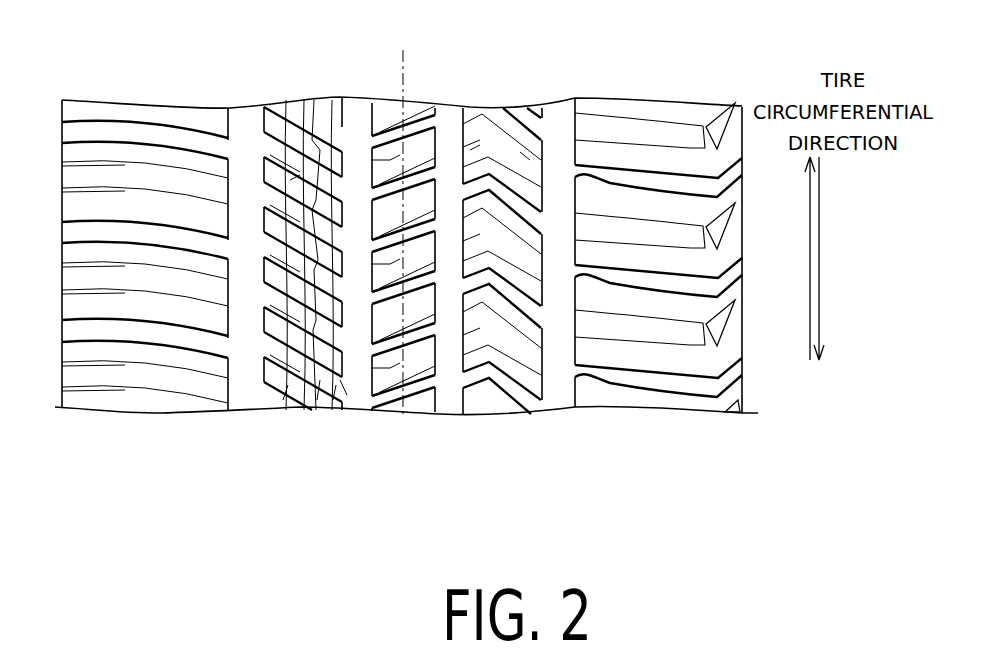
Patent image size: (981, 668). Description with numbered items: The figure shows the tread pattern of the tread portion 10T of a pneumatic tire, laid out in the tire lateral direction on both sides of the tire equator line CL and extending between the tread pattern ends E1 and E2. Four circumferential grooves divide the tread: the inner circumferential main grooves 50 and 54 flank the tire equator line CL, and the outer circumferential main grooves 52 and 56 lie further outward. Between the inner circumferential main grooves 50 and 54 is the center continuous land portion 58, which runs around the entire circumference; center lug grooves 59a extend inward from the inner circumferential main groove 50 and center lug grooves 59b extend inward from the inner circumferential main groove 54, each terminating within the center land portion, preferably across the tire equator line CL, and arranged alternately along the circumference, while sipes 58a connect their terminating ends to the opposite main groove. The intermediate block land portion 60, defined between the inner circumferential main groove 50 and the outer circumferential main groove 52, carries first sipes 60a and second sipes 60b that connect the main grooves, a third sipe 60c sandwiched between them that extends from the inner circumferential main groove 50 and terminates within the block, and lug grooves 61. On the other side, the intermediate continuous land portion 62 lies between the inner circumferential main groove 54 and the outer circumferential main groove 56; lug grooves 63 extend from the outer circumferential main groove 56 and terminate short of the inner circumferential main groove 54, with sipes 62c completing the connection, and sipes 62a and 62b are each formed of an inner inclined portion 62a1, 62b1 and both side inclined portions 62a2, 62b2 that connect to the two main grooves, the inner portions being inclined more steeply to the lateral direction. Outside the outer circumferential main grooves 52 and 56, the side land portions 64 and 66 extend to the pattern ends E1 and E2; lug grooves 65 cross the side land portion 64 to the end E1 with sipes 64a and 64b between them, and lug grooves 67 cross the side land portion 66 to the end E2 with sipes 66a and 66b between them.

The tread portion 10T is at (577, 90).
The inner circumferential main groove 50 is at (447, 148).
The outer circumferential main groove 52 is at (556, 130).
The inner circumferential main groove 54 is at (358, 120).
The outer circumferential main groove 56 is at (252, 135).
The center continuous land portion 58 is at (405, 400).
The sipe 58a is at (400, 400).
The center lug groove 59a is at (457, 400).
The center lug groove 59b is at (383, 395).
The intermediate block land portion 60 is at (475, 400).
The first sipe 60a is at (498, 165).
The second sipe 60b is at (520, 152).
The third sipe 60c is at (470, 150).
The lug groove 61 is at (513, 400).
The intermediate continuous land portion 62 is at (303, 400).
The sipe 62a is at (276, 135).
The inner inclined portion 62a1 is at (367, 400).
The both side inclined portion 62a2 is at (290, 180).
The sipe 62b is at (305, 175).
The inner inclined portion 62b1 is at (317, 400).
The both side inclined portion 62b2 is at (283, 400).
The sipe 62c is at (322, 165).
The lug groove 63 is at (300, 400).
The side land portion 64 is at (615, 400).
The sipe 64a is at (673, 218).
The sipe 64b is at (672, 258).
The lug groove 65 is at (692, 383).
The side land portion 66 is at (170, 402).
The sipe 66a is at (212, 403).
The sipe 66b is at (190, 373).
The lug groove 67 is at (140, 327).
The tread pattern end E1 is at (742, 370).
The tread pattern end E2 is at (60, 310).
The tire equator line CL is at (400, 221).